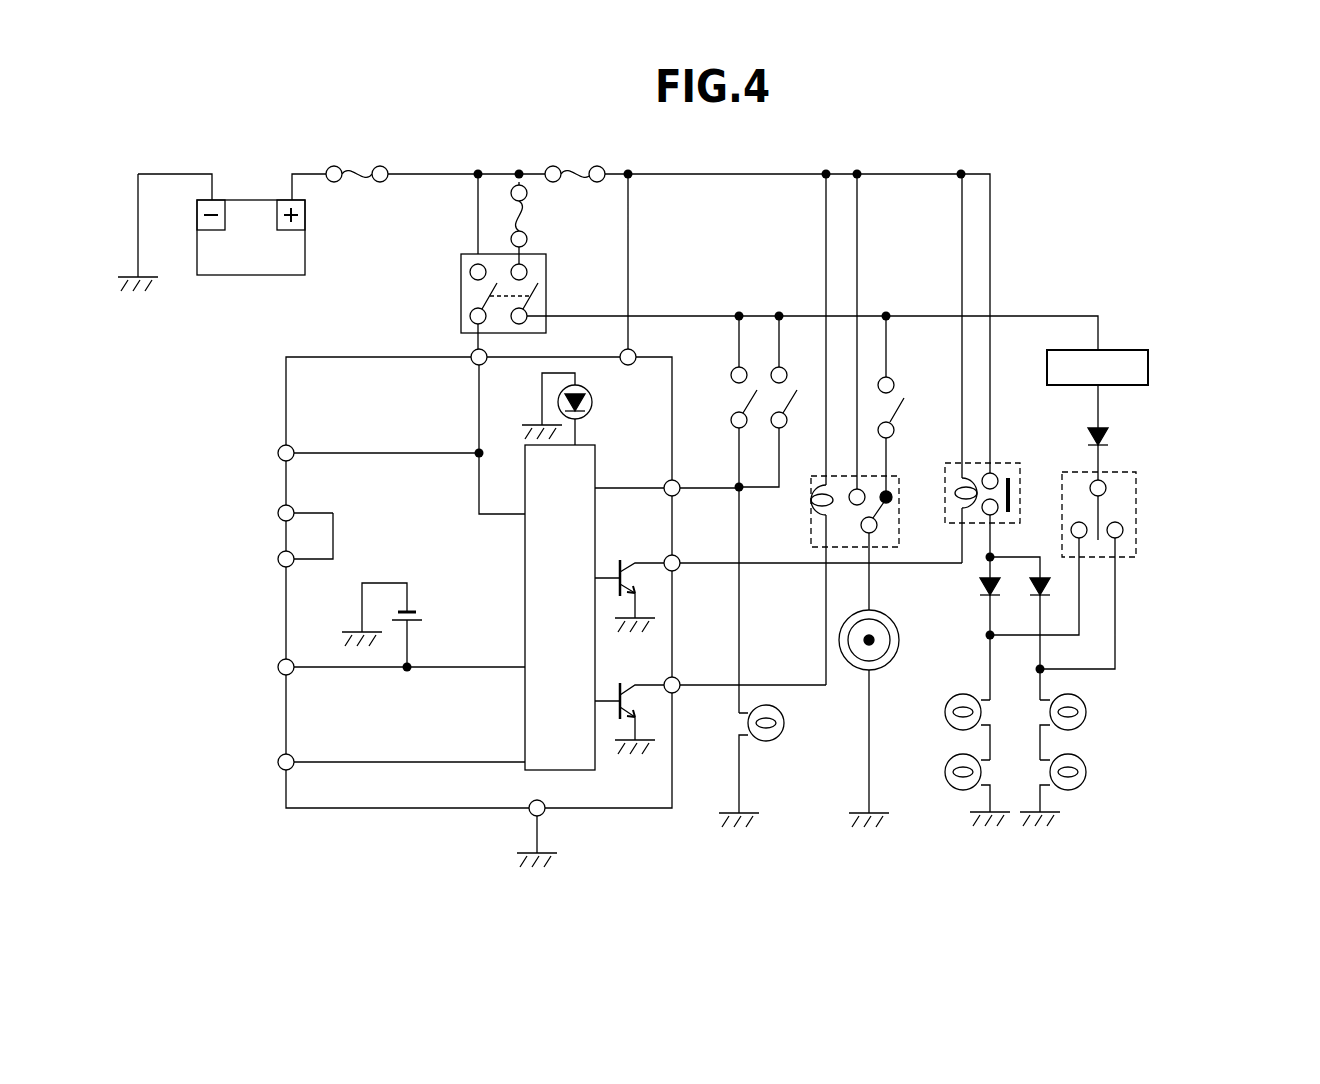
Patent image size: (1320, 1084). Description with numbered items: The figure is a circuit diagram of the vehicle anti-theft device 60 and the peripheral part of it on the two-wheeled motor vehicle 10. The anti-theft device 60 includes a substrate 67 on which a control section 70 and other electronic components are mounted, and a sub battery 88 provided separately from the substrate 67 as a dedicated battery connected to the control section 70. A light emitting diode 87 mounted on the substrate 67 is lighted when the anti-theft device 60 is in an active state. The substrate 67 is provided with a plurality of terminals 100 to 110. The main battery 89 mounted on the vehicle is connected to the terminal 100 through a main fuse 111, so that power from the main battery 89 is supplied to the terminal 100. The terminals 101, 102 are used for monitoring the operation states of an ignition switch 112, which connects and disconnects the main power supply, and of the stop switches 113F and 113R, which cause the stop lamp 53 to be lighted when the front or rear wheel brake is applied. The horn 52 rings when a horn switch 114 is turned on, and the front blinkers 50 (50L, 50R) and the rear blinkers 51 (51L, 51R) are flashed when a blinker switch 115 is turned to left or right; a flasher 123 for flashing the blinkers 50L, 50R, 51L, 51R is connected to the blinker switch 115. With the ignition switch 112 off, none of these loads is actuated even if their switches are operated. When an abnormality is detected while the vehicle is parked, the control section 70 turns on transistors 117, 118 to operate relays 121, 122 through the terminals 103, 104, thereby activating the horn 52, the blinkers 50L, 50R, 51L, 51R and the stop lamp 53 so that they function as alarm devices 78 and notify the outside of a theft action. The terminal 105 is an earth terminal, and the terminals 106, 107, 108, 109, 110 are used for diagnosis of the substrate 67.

The two-wheeled motor vehicle 10 is at (1169, 202).
The front blinkers 50 is at (1157, 680).
The front blinker 50L is at (958, 697).
The front blinker 50R is at (1087, 710).
The rear blinkers 51 is at (1157, 773).
The rear blinker 51L is at (955, 790).
The rear blinker 51R is at (1087, 775).
The horn 52 is at (901, 670).
The stop lamp 53 is at (774, 753).
The vehicle anti-theft device 60 is at (316, 850).
The substrate 67 is at (287, 814).
The control section 70 is at (523, 553).
The alarm devices 78 is at (1219, 688).
The light emitting diode 87 is at (592, 402).
The sub battery 88 is at (439, 615).
The main battery 89 is at (248, 200).
The terminal 100 is at (474, 366).
The terminal 101 is at (636, 356).
The terminal 102 is at (678, 482).
The terminal 103 is at (678, 557).
The terminal 104 is at (678, 678).
The earth terminal 105 is at (548, 816).
The terminal 106 is at (278, 762).
The terminal 107 is at (278, 667).
The terminal 108 is at (278, 559).
The terminal 109 is at (278, 513).
The terminal 110 is at (278, 453).
The main fuse 111 is at (362, 157).
The ignition switch 112 is at (461, 254).
The stop switch 113F is at (723, 353).
The stop switch 113R is at (785, 353).
The horn switch 114 is at (900, 359).
The blinker switch 115 is at (1136, 487).
The transistor 117 is at (625, 545).
The transistor 118 is at (631, 669).
The relay 121 is at (1003, 463).
The relay 122 is at (893, 477).
The flasher 123 is at (1136, 350).